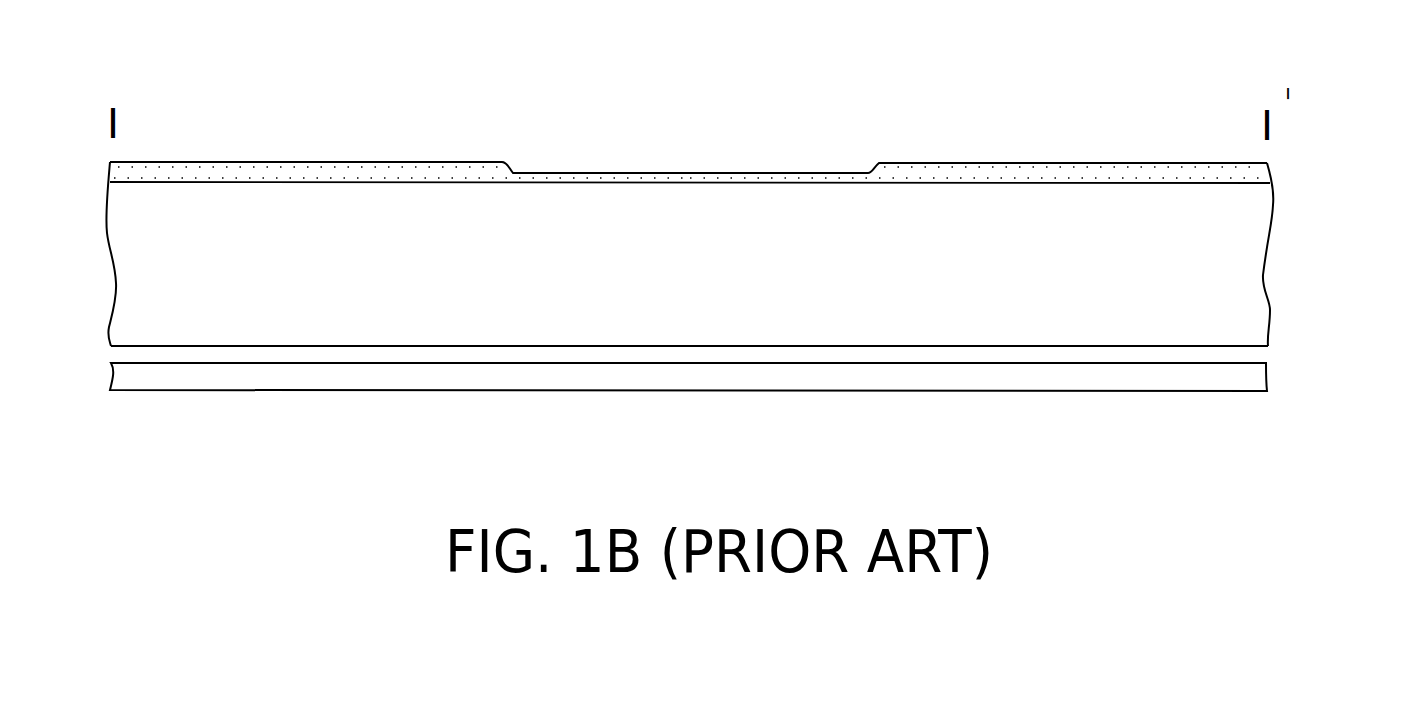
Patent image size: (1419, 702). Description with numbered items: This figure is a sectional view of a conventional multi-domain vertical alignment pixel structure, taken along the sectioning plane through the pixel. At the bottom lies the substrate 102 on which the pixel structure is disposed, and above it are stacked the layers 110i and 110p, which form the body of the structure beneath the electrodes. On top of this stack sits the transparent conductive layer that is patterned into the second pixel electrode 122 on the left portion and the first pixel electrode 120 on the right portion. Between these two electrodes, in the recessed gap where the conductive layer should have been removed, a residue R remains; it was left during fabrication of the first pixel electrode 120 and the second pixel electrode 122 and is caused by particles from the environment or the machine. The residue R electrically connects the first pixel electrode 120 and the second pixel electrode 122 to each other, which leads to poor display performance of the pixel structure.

The substrate 102 is at (1250, 382).
The intrinsic semiconductor layer 110i is at (1248, 355).
The p-type semiconductor layer 110p is at (1220, 247).
The first pixel electrode 120 is at (1027, 173).
The second pixel electrode 122 is at (290, 173).
The residue R is at (693, 177).